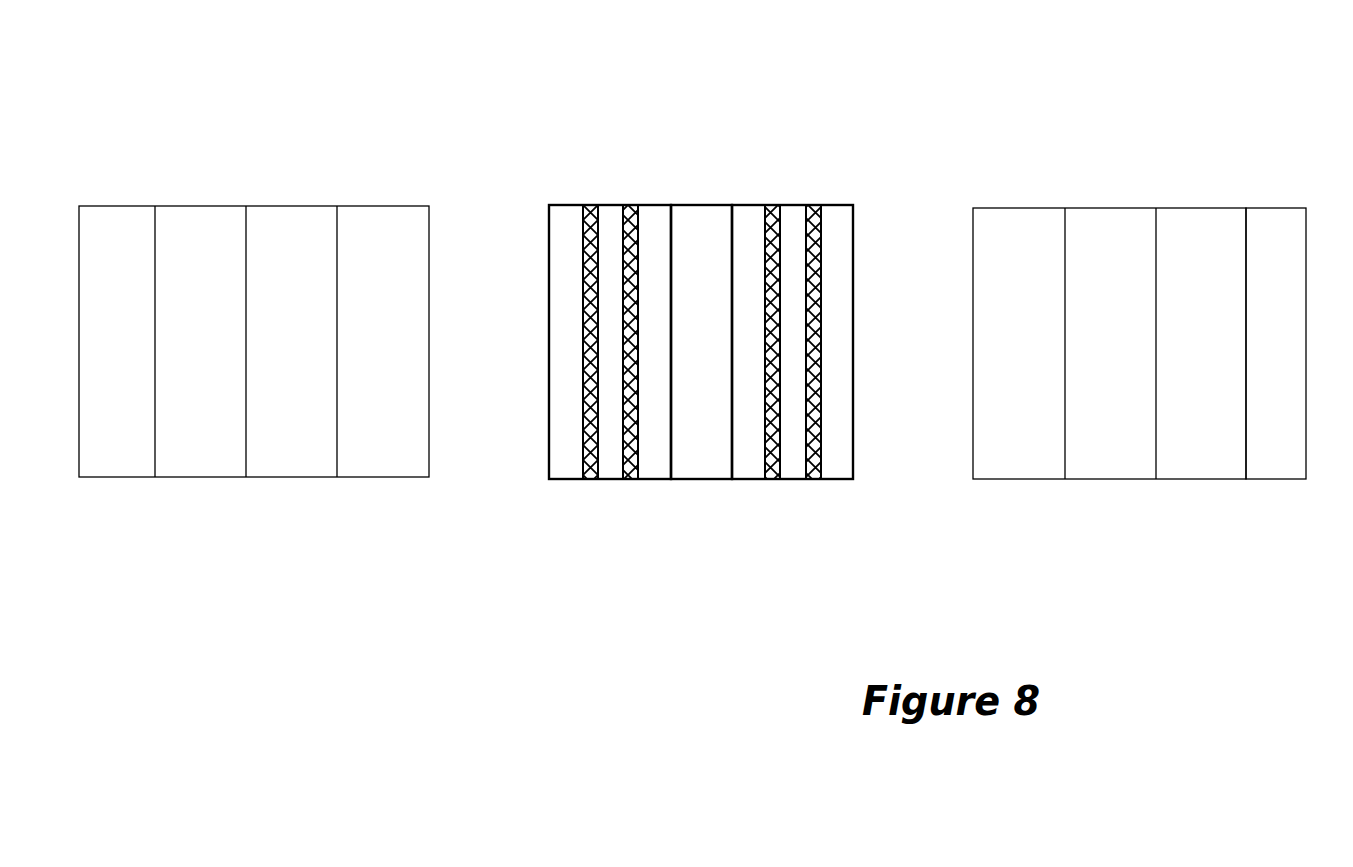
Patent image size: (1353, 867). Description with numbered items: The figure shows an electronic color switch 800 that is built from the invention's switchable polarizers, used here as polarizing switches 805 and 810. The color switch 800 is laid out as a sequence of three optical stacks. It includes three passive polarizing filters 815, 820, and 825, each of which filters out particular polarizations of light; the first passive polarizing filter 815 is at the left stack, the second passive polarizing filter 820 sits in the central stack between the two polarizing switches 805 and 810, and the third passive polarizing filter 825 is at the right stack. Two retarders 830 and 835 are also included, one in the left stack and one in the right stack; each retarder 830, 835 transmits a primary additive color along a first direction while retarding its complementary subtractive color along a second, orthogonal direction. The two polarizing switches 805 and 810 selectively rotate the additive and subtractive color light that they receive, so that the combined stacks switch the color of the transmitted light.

The electronic color switch 800 is at (642, 127).
The polarizing switch 805 is at (611, 479).
The polarizing switch 810 is at (792, 479).
The passive polarizing filter 815 is at (123, 206).
The passive polarizing filter 820 is at (702, 205).
The passive polarizing filter 825 is at (1275, 208).
The retarder 830 is at (155, 477).
The retarder 835 is at (973, 479).